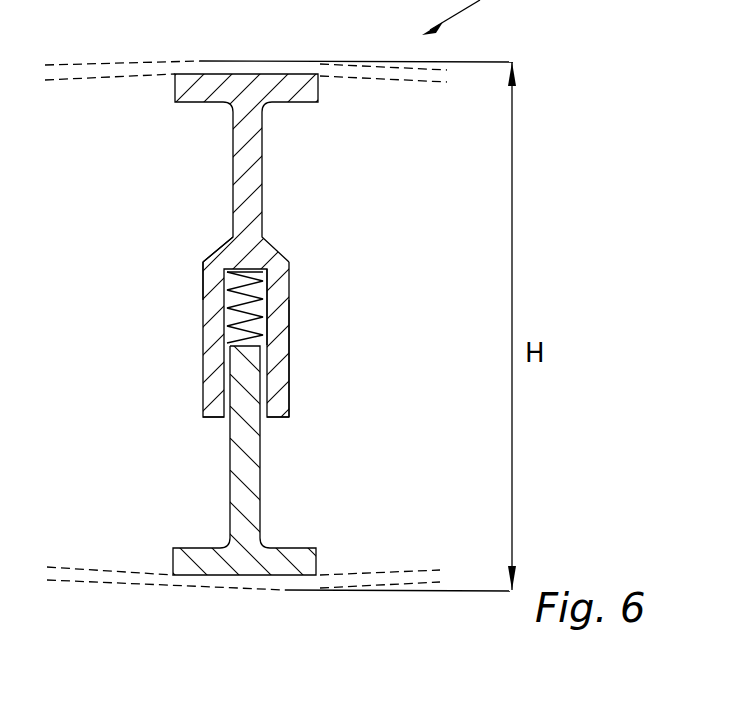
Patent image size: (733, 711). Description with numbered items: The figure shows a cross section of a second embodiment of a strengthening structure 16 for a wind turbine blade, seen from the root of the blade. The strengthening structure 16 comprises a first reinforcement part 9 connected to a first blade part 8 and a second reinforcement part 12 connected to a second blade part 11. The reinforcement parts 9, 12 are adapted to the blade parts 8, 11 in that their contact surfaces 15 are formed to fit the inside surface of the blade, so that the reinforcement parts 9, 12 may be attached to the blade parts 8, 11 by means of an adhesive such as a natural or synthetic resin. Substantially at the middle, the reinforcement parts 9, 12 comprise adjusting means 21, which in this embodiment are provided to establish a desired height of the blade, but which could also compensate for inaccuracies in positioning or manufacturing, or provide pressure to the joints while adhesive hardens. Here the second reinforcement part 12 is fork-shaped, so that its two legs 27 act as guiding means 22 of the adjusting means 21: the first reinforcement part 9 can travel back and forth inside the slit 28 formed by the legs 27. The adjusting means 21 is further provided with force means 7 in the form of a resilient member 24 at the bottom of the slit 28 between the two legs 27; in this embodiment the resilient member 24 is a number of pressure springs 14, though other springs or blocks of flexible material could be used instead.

The force means 7 is at (275, 284).
The first blade part 8 is at (305, 585).
The first reinforcement part 9 is at (245, 502).
The second blade part 11 is at (335, 70).
The second reinforcement part 12 is at (247, 197).
The pressure springs 14 is at (268, 328).
The contact surfaces 15 is at (230, 73).
The strengthening structure 16 is at (330, 344).
The adjusting means 21 is at (152, 386).
The guiding means 22 is at (278, 367).
The resilient member 24 is at (230, 295).
The legs 27 is at (278, 395).
The slit 28 is at (223, 390).